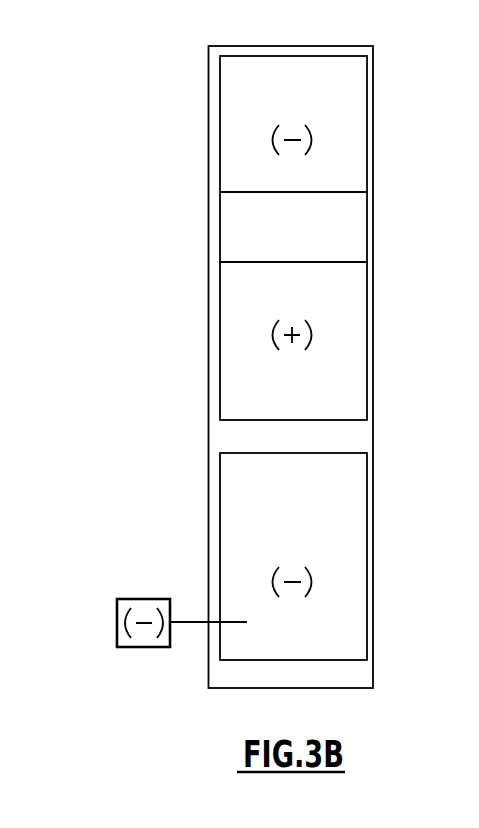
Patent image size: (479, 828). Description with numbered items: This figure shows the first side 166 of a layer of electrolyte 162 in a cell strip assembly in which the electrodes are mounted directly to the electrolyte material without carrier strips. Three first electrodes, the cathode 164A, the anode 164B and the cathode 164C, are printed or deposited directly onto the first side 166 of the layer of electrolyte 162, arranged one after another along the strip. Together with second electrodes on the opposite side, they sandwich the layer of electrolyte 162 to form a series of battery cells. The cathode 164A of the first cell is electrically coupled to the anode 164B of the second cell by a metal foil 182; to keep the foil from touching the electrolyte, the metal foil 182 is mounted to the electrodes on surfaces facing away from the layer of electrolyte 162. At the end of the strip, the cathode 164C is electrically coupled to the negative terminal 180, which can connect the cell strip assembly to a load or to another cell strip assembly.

The layer of electrolyte 162 is at (303, 46).
The cathode 164A is at (253, 105).
The anode 164B is at (253, 345).
The cathode 164C is at (257, 532).
The metal foil 182 is at (340, 225).
The first side 166 is at (227, 436).
The negative terminal 180 is at (117, 618).